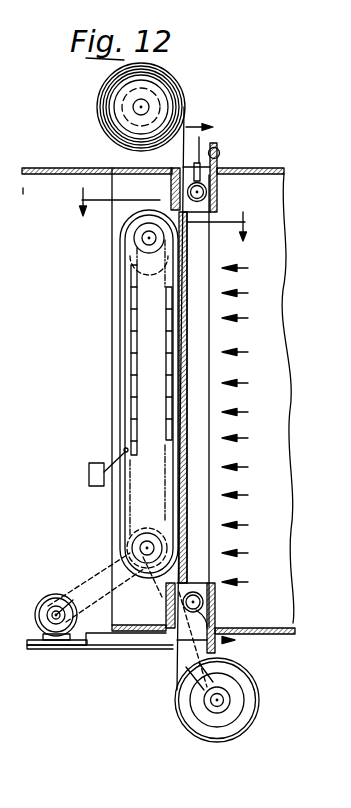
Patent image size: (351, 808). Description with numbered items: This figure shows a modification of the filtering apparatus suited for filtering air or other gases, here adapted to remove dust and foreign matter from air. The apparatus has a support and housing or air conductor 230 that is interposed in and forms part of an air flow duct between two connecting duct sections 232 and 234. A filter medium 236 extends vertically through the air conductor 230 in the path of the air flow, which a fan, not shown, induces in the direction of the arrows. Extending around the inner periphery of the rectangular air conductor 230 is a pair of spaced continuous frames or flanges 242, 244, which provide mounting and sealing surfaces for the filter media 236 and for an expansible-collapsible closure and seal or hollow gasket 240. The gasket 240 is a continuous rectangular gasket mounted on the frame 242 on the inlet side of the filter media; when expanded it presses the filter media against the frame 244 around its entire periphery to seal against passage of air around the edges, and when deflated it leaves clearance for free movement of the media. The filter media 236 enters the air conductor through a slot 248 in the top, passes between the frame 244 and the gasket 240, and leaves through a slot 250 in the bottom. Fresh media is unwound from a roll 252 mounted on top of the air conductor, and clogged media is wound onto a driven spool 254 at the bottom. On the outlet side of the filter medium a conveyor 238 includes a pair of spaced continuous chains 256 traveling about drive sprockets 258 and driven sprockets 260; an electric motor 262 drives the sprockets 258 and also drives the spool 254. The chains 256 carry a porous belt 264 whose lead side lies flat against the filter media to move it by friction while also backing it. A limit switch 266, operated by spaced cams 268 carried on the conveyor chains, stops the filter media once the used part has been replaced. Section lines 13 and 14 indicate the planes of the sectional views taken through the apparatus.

The air conductor 230 is at (113, 167).
The duct section 232 is at (250, 167).
The duct section 234 is at (75, 167).
The filter medium 236 is at (187, 432).
The conveyor 238 is at (130, 367).
The hollow gasket 240 is at (200, 583).
The frame 242 is at (218, 197).
The frame 244 is at (171, 192).
The slot 248 is at (188, 158).
The slot 250 is at (210, 628).
The roll 252 is at (97, 92).
The driven spool 254 is at (261, 716).
The continuous chains 256 is at (131, 310).
The drive sprockets 258 is at (140, 533).
The driven sprockets 260 is at (147, 255).
The electric motor 262 is at (67, 578).
The belt 264 is at (125, 403).
The limit switch 266 is at (95, 487).
The cams 268 is at (173, 373).
The section line 13 is at (222, 385).
The section line 14 is at (162, 213).